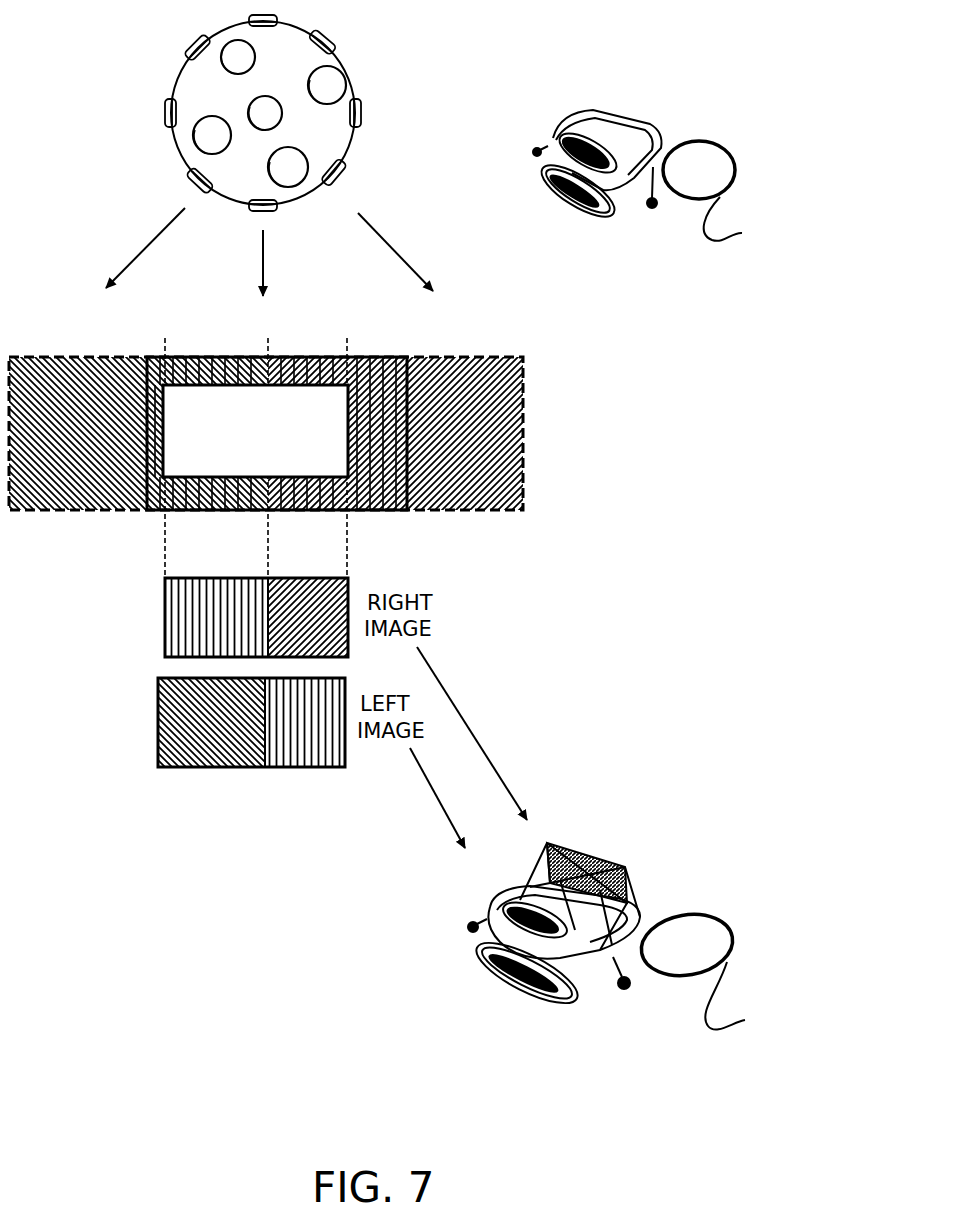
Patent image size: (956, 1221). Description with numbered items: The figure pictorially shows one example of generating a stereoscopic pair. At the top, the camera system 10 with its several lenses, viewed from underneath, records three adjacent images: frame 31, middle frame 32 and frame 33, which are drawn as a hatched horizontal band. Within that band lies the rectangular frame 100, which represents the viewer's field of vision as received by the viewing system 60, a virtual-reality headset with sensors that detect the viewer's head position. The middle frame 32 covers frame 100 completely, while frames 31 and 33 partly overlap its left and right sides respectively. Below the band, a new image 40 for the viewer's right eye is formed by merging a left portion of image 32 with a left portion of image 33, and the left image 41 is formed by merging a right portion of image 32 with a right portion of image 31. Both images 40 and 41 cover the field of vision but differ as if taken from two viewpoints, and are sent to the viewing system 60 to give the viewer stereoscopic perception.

The camera system 10 is at (130, 80).
The frame 31 is at (78, 411).
The middle frame 32 is at (211, 411).
The frame 33 is at (395, 412).
The frame 100 is at (567, 255).
The new image 40 is at (165, 612).
The left image 41 is at (158, 705).
The viewing system 60 is at (765, 190).